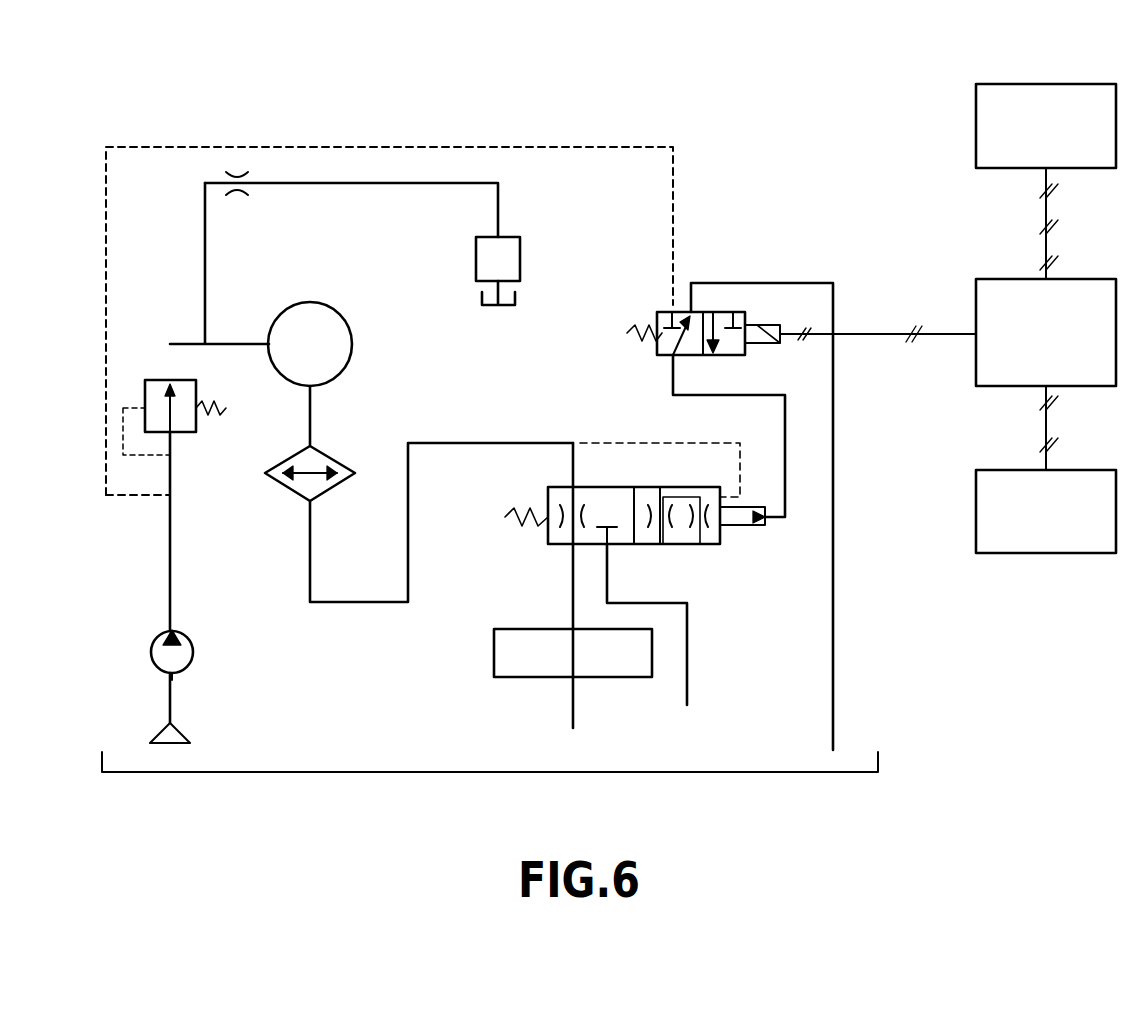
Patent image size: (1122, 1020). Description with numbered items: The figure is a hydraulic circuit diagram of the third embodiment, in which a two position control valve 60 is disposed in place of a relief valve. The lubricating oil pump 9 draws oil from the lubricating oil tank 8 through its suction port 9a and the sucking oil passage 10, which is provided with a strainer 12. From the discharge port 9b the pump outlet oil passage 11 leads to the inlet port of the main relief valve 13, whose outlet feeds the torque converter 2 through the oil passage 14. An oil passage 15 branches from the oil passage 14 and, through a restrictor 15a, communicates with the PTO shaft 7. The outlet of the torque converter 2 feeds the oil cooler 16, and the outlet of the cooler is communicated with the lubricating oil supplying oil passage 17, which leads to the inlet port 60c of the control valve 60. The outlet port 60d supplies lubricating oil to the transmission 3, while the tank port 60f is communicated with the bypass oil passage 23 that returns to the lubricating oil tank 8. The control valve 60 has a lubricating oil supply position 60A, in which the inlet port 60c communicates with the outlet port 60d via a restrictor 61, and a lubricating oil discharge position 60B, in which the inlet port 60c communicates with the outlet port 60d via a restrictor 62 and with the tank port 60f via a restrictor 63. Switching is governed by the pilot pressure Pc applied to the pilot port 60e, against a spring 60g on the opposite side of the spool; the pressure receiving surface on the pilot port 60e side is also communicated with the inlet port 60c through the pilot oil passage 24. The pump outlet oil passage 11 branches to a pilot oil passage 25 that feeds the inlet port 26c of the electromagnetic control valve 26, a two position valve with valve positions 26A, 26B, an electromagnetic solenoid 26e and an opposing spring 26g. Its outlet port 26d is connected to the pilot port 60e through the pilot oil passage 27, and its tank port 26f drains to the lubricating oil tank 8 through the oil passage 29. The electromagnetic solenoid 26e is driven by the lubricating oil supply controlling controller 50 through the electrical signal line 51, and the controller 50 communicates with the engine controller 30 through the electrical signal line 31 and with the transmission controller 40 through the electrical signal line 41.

The torque converter 2 is at (338, 308).
The transmission 3 is at (513, 677).
The PTO shaft 7 is at (507, 237).
The lubricating oil tank 8 is at (482, 298).
The lubricating oil pump 9 is at (151, 651).
The suction port 9a is at (170, 676).
The discharge port 9b is at (166, 631).
The sucking oil passage 10 is at (170, 708).
The pump outlet oil passage 11 is at (170, 528).
The strainer 12 is at (160, 733).
The main relief valve 13 is at (168, 380).
The oil passage 14 is at (239, 344).
The oil passage 15 is at (428, 183).
The restrictor 15a is at (237, 196).
The oil cooler 16 is at (294, 461).
The lubricating oil supplying oil passage 17 is at (310, 526).
The bypass oil passage 23 is at (687, 632).
The pilot oil passage 24 is at (742, 462).
The pilot oil passage 25 is at (106, 360).
The electromagnetic control valve 26 is at (734, 310).
The valve position 26A is at (666, 298).
The valve position 26B is at (724, 306).
The inlet port 26c is at (664, 312).
The outlet port 26d is at (672, 356).
The electromagnetic solenoid 26e is at (765, 325).
The tank port 26f is at (685, 312).
The spring 26g is at (627, 334).
The pilot oil passage 27 is at (745, 395).
The oil passage 29 is at (794, 282).
The engine controller 30 is at (1009, 84).
The electrical signal line 31 is at (1049, 211).
The transmission controller 40 is at (1009, 470).
The electrical signal line 41 is at (1049, 428).
The lubricating oil supply controlling controller 50 is at (1007, 279).
The electrical signal line 51 is at (878, 336).
The control valve 60 is at (739, 542).
The lubricating oil supply position 60A is at (600, 484).
The lubricating oil discharge position 60B is at (694, 484).
The inlet port 60c is at (562, 488).
The outlet port 60d is at (570, 546).
The pilot port 60e is at (756, 517).
The tank port 60f is at (608, 544).
The spring 60g is at (505, 517).
The restrictor 61 is at (588, 508).
The restrictor 62 is at (668, 545).
The restrictor 63 is at (704, 545).
The pilot pressure Pc is at (807, 489).